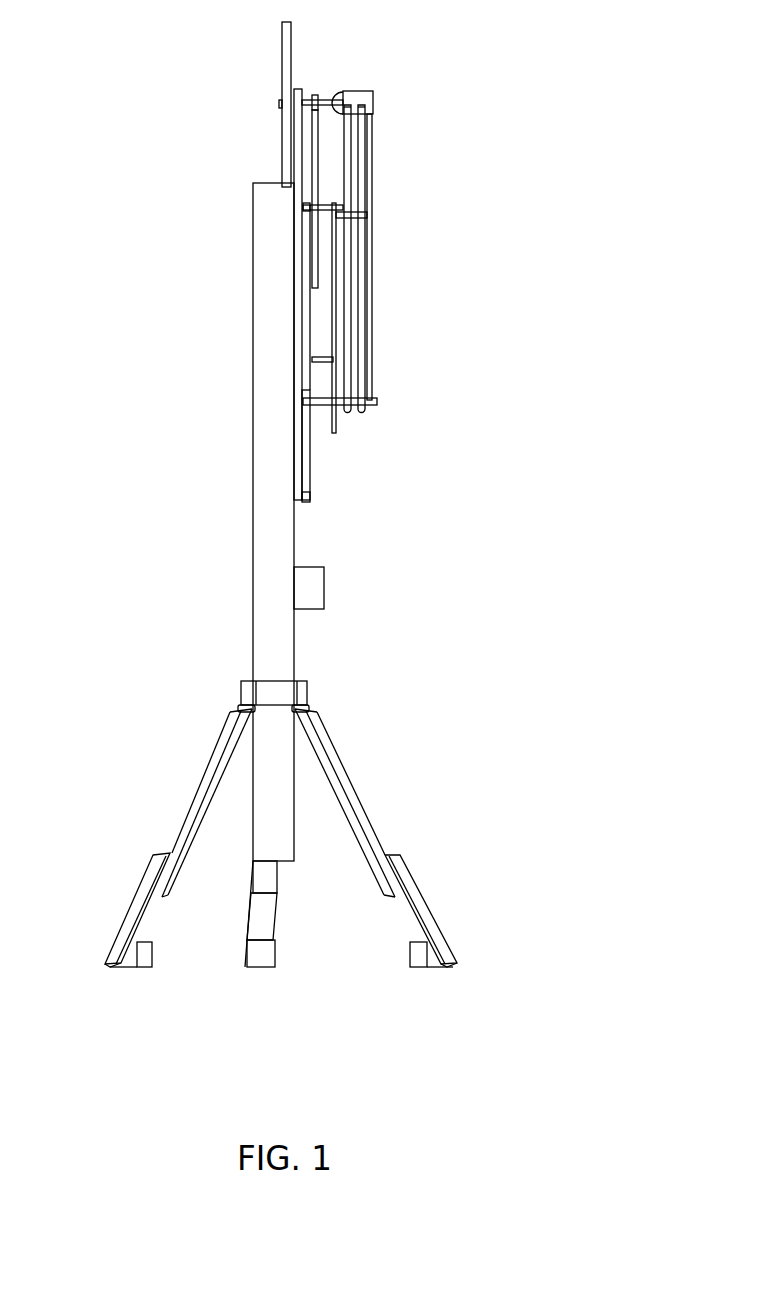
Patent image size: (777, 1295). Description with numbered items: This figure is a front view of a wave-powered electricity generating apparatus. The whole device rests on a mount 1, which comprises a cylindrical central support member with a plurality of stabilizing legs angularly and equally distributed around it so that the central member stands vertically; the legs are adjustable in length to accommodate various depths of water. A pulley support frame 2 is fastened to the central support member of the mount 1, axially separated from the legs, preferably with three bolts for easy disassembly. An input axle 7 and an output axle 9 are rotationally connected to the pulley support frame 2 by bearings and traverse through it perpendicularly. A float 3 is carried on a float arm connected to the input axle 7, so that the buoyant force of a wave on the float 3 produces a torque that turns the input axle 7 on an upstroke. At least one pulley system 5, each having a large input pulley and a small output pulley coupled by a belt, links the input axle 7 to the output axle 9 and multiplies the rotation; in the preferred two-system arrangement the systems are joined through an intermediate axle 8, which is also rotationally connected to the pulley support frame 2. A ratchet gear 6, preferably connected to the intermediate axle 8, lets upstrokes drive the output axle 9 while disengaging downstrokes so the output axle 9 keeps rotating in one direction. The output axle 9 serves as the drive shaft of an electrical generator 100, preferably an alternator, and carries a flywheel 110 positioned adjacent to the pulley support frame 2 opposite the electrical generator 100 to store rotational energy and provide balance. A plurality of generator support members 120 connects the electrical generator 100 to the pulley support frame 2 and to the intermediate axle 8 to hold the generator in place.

The mount 1 is at (205, 689).
The pulley support frame 2 is at (305, 303).
The float 3 is at (312, 587).
The pulley system 5 is at (318, 190).
The ratchet gear 6 is at (325, 215).
The input axle 7 is at (327, 360).
The intermediate axle 8 is at (357, 215).
The output axle 9 is at (327, 100).
The electrical generator 100 is at (355, 93).
The flywheel 110 is at (285, 83).
The generator support members 120 is at (363, 118).